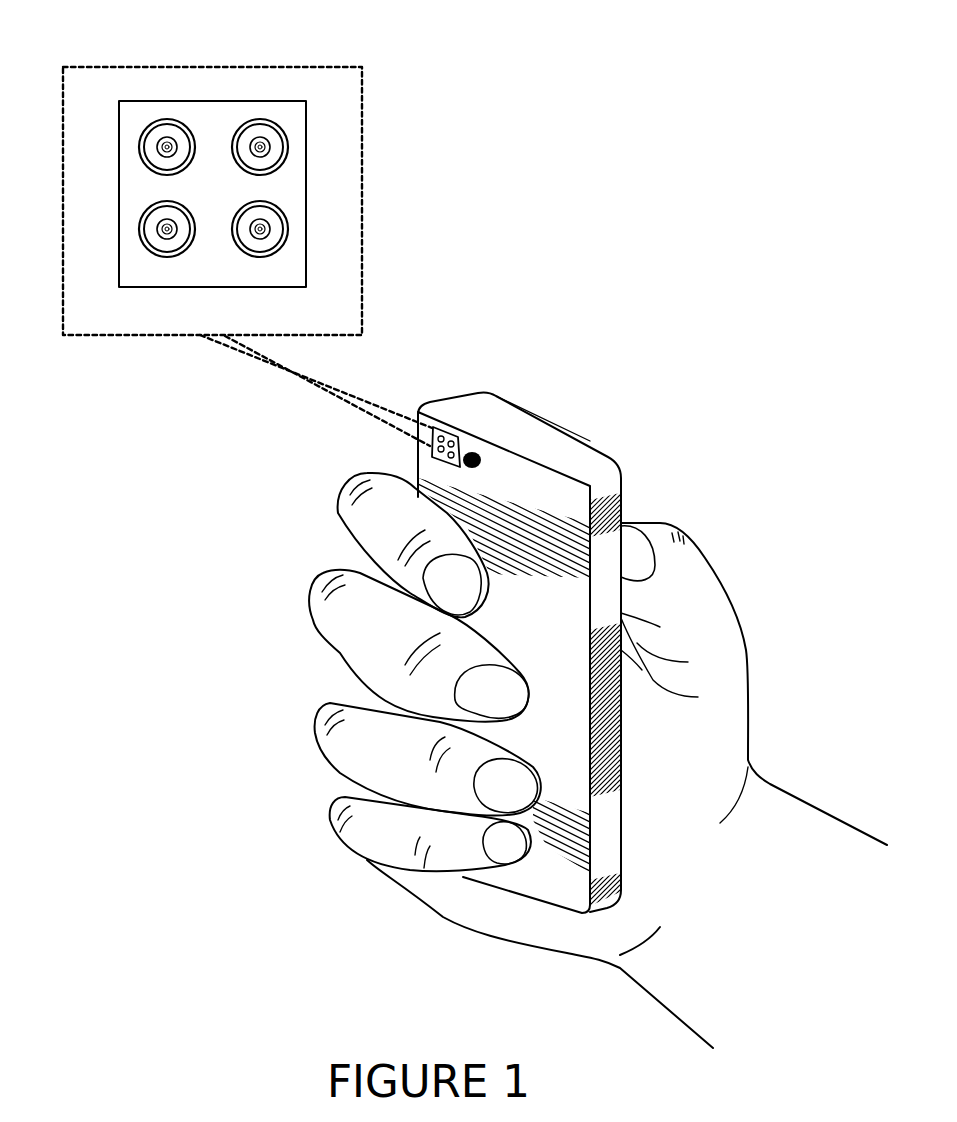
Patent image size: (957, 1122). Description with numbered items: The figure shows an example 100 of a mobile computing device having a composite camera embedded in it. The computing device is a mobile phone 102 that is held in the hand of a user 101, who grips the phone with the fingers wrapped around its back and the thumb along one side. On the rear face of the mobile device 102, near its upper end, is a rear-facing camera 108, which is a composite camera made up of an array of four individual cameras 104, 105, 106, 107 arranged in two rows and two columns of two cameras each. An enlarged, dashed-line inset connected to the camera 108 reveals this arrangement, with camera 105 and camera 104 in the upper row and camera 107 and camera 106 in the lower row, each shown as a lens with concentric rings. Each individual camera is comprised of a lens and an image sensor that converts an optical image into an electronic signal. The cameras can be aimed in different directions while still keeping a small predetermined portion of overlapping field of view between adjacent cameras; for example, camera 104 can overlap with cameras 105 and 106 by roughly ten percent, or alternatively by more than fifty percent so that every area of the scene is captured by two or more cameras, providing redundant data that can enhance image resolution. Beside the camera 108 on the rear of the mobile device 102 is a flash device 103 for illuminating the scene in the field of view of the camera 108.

The example 100 is at (688, 138).
The user 101 is at (795, 585).
The mobile phone 102 is at (477, 410).
The flash device 103 is at (478, 458).
The camera 104 is at (288, 147).
The camera 105 is at (167, 120).
The camera 106 is at (288, 237).
The camera 107 is at (167, 256).
The rear-facing camera 108 is at (432, 433).